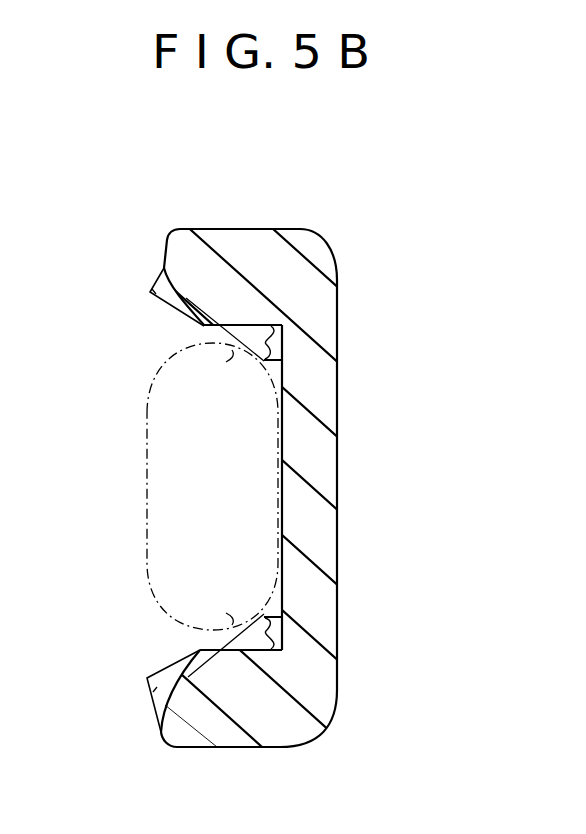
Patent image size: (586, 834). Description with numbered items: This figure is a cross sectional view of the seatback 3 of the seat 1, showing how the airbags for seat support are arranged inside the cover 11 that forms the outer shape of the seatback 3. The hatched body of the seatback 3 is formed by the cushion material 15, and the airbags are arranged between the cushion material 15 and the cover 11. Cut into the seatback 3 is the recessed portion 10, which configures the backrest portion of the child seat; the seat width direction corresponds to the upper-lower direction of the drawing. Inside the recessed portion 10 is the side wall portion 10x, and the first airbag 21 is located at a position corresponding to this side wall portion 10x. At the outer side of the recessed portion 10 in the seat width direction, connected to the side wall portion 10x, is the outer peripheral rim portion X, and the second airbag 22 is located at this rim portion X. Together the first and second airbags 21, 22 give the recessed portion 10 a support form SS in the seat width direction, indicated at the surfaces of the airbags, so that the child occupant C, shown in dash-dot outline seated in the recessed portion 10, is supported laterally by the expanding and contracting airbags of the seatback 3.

The seat 1 is at (110, 176).
The seatback 3 is at (245, 229).
The recessed portion 10 is at (282, 488).
The side wall portion 10x is at (232, 350).
The cover 11 is at (160, 266).
The cushion material 15 is at (337, 290).
The first airbag 21 is at (283, 342).
The second airbag 22 is at (152, 290).
The support form SS is at (195, 327).
The outer peripheral rim portion X is at (172, 312).
The child occupant C is at (147, 487).